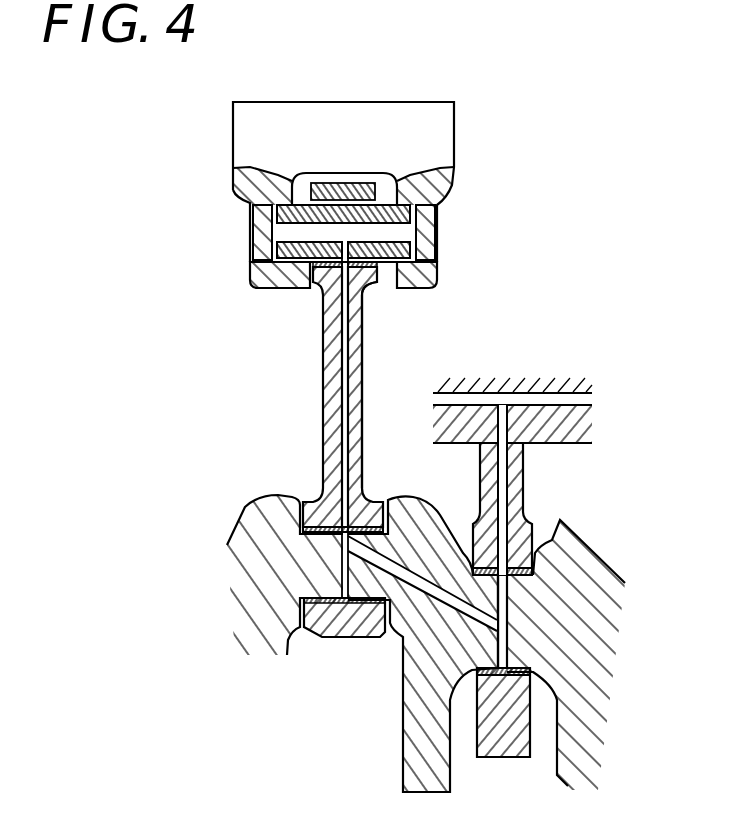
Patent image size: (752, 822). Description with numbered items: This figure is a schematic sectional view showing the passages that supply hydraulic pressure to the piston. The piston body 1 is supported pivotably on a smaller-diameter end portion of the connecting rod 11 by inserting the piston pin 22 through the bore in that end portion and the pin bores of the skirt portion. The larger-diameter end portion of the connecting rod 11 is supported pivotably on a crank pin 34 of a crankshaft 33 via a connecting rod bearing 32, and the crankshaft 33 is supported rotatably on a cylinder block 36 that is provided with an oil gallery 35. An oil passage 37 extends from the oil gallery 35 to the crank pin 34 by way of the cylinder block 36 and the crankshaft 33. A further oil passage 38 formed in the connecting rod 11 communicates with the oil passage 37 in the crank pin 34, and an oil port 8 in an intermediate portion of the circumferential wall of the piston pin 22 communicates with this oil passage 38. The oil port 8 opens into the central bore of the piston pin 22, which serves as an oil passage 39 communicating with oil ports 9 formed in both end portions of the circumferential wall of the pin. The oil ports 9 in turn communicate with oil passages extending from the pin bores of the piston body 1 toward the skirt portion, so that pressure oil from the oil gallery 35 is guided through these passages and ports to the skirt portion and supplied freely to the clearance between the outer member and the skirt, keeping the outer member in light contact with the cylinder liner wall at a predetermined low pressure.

The piston body 1 is at (417, 145).
The oil port 8 is at (358, 290).
The oil ports 9 is at (277, 264).
The connecting rod 11 is at (353, 383).
The piston pin 22 is at (430, 243).
The connecting rod bearing 32 is at (365, 633).
The crankshaft 33 is at (420, 717).
The crank pin 34 is at (307, 577).
The oil gallery 35 is at (535, 398).
The cylinder block 36 is at (563, 430).
The oil passage 37 is at (397, 577).
The oil passage 38 is at (330, 420).
The oil passage 39 is at (318, 232).